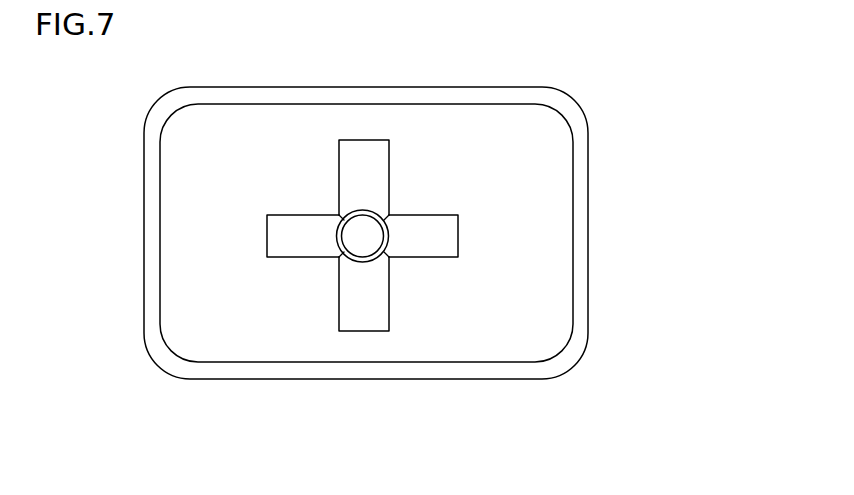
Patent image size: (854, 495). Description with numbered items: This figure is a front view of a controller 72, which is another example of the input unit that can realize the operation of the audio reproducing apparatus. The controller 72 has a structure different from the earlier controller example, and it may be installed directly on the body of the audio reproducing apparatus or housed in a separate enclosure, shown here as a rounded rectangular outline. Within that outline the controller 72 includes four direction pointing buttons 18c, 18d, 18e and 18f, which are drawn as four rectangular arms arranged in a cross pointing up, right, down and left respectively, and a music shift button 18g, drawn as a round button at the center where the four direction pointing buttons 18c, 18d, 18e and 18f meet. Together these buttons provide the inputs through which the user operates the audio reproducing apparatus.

The controller 72 is at (588, 128).
The direction pointing button 18c is at (390, 180).
The direction pointing button 18d is at (438, 258).
The direction pointing button 18e is at (360, 331).
The direction pointing button 18f is at (287, 258).
The music shift button 18g is at (340, 237).